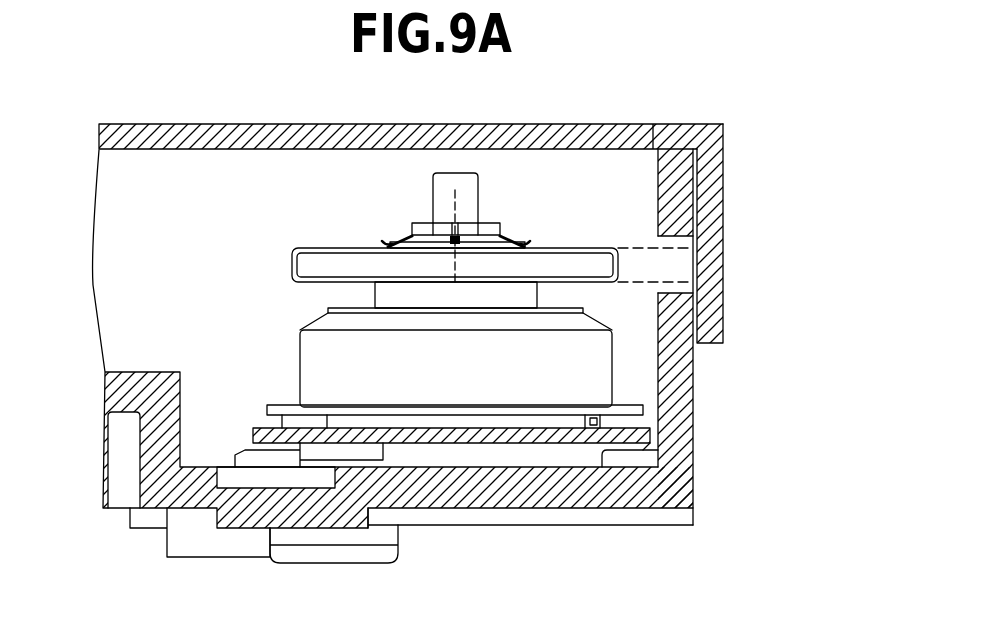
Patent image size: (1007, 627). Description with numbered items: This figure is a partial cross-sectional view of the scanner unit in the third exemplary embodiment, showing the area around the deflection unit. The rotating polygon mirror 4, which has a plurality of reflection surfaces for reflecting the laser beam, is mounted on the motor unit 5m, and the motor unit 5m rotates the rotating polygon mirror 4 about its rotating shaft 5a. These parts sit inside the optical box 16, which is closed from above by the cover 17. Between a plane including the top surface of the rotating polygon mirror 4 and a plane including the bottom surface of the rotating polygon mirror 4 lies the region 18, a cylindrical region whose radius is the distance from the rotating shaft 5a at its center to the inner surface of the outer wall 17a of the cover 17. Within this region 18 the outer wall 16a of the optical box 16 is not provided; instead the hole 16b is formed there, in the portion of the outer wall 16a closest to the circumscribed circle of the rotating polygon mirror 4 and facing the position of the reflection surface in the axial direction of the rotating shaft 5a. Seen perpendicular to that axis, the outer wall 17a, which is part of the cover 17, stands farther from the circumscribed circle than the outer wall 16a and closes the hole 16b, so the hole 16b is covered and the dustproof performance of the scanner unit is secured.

The rotating polygon mirror 4 is at (333, 262).
The rotating shaft 5a is at (455, 193).
The motor unit 5m is at (333, 367).
The optical box 16 is at (607, 488).
The outer wall 16a is at (677, 397).
The hole 16b is at (677, 288).
The cover 17 is at (577, 140).
The outer wall of the cover 17a is at (713, 197).
The region 18 is at (677, 265).